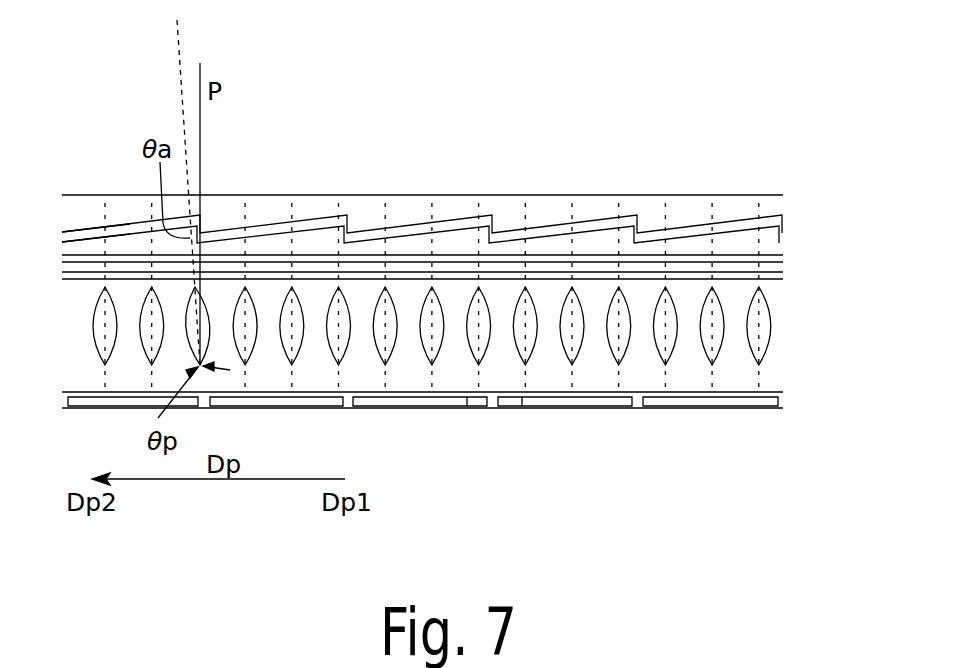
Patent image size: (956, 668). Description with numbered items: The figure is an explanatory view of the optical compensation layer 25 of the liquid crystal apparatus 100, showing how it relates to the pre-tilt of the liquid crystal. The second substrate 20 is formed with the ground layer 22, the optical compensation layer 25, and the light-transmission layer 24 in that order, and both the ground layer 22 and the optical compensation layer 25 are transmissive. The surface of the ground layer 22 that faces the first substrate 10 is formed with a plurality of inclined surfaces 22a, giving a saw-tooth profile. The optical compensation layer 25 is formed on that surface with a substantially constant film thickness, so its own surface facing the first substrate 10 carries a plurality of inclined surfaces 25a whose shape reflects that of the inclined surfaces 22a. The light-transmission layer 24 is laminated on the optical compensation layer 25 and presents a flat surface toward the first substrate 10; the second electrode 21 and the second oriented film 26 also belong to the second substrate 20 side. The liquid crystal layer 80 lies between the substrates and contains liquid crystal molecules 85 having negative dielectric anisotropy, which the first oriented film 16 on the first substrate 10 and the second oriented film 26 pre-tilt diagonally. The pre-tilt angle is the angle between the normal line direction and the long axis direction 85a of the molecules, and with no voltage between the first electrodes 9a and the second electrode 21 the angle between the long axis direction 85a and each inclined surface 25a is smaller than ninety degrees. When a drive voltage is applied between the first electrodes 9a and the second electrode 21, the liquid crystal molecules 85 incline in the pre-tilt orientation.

The first substrate 10 is at (793, 405).
The first oriented film 16 is at (555, 403).
The first electrodes 9a is at (522, 402).
The second substrate 20 is at (793, 208).
The second electrode 21 is at (583, 267).
The ground layer 22 is at (395, 213).
The inclined surfaces 22a is at (82, 230).
The light-transmission layer 24 is at (442, 252).
The optical compensation layer 25 is at (360, 235).
The inclined surfaces 25a is at (122, 236).
The second oriented film 26 is at (632, 280).
The liquid crystal layer 80 is at (60, 285).
The liquid crystal molecules 85 is at (187, 345).
The long axis direction 85a is at (180, 40).
The liquid crystal apparatus 100 is at (852, 95).